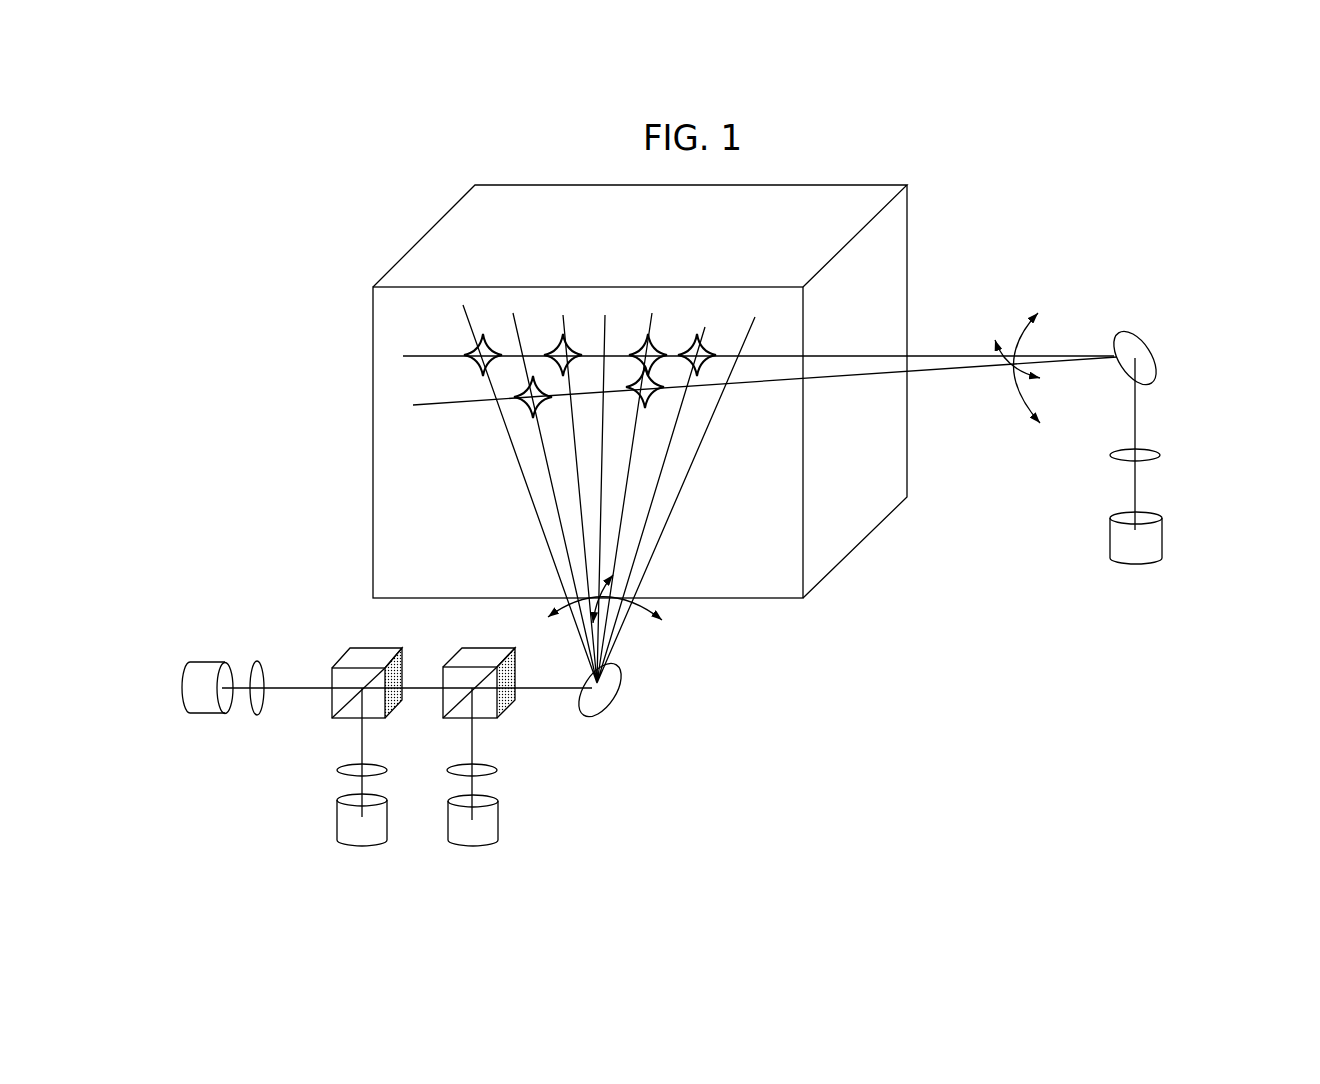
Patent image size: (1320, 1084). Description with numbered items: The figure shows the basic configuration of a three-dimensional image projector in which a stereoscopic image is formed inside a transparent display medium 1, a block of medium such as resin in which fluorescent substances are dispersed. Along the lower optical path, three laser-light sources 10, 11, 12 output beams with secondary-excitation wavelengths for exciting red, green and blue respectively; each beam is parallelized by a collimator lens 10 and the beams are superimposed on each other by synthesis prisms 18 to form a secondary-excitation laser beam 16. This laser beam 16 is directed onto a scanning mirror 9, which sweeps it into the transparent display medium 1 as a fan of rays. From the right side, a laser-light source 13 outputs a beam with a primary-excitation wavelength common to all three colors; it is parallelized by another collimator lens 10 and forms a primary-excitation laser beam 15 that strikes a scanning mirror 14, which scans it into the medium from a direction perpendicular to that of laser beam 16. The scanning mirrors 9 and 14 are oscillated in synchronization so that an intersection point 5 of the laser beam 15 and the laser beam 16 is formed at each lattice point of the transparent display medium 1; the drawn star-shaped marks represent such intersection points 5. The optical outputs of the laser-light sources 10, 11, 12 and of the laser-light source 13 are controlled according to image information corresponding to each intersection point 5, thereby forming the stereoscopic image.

The transparent display medium 1 is at (862, 540).
The intersection point 5 is at (568, 356).
The scanning mirror 9 is at (619, 703).
The laser-light source / collimator lens 10 is at (217, 660).
The laser-light source 11 is at (368, 840).
The laser-light source 12 is at (489, 830).
The laser-light source 13 is at (1157, 553).
The scanning mirror 14 is at (1158, 360).
The laser beam 15 is at (893, 356).
The laser beam 16 is at (679, 498).
The synthesis prism 18 is at (377, 647).